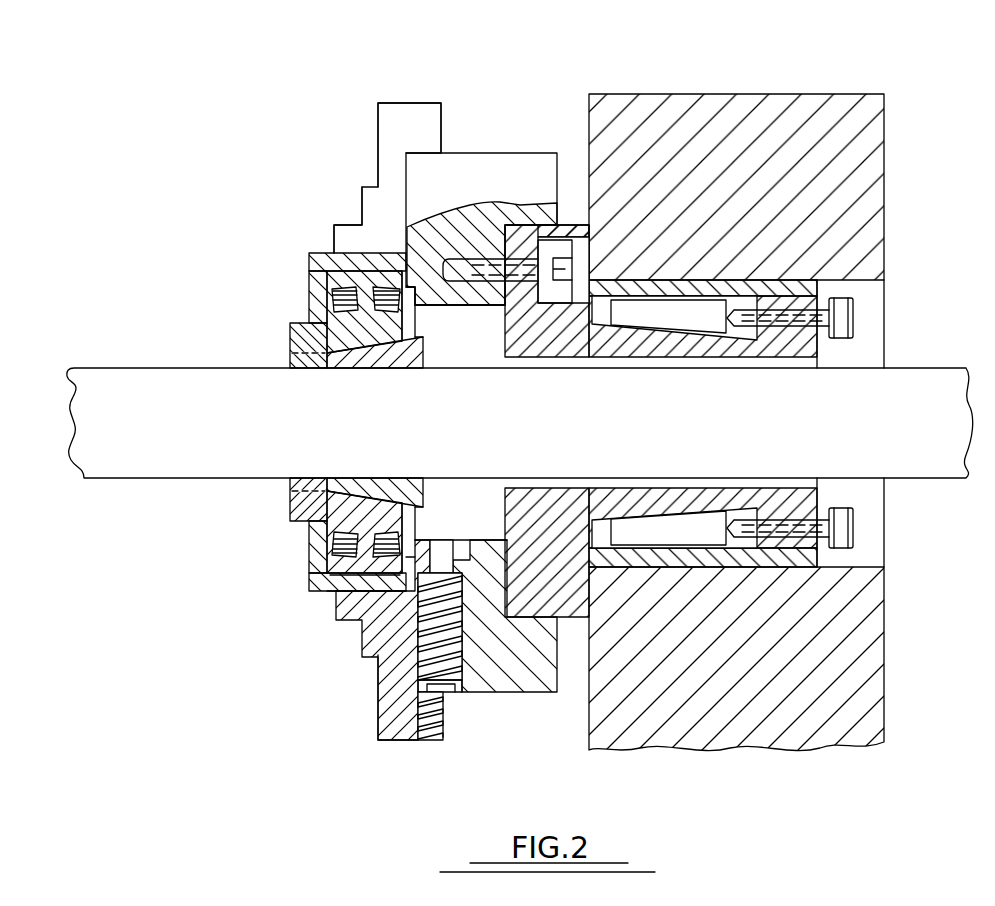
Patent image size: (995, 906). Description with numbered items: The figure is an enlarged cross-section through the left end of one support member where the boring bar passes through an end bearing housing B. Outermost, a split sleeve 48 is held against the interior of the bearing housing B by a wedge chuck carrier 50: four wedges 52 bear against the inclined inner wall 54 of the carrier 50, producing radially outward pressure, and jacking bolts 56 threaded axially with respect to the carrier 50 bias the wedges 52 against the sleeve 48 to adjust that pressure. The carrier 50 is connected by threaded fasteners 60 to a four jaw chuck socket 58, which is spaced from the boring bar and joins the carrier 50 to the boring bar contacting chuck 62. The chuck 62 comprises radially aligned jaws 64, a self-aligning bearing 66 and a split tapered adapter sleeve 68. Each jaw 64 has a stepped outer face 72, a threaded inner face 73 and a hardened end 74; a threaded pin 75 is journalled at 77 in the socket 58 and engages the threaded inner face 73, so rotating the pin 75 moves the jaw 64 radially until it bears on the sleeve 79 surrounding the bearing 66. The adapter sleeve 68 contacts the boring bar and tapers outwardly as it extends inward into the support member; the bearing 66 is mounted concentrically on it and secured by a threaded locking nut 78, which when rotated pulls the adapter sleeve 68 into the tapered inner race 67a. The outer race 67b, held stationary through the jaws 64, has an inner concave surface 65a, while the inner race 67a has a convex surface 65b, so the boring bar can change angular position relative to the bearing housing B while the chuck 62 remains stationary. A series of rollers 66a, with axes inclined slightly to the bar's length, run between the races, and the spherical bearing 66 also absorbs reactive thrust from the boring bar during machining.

The bearing housing B is at (900, 156).
The split sleeve 48 is at (808, 284).
The wedge chuck carrier 50 is at (572, 225).
The wedges 52 is at (674, 318).
The inclined inner wall 54 is at (598, 522).
The jacking bolts 56 is at (846, 320).
The four jaw chuck socket 58 is at (465, 163).
The threaded fasteners 60 is at (549, 247).
The chuck 62 is at (321, 436).
The jaws 64 is at (370, 135).
The inner concave surface 65a is at (348, 596).
The convex surface 65b is at (330, 532).
The self-aligning bearing 66 is at (320, 300).
The rollers 66a is at (343, 516).
The tapered inner race 67a is at (323, 316).
The outer race 67b is at (330, 590).
The split tapered adapter sleeve 68 is at (423, 348).
The stepped outer face 72 is at (362, 193).
The threaded inner face 73 is at (427, 743).
The hardened end 74 is at (402, 103).
The threaded pin 75 is at (462, 690).
The journal 77 is at (445, 540).
The threaded locking nut 78 is at (293, 498).
The sleeve 79 is at (312, 253).